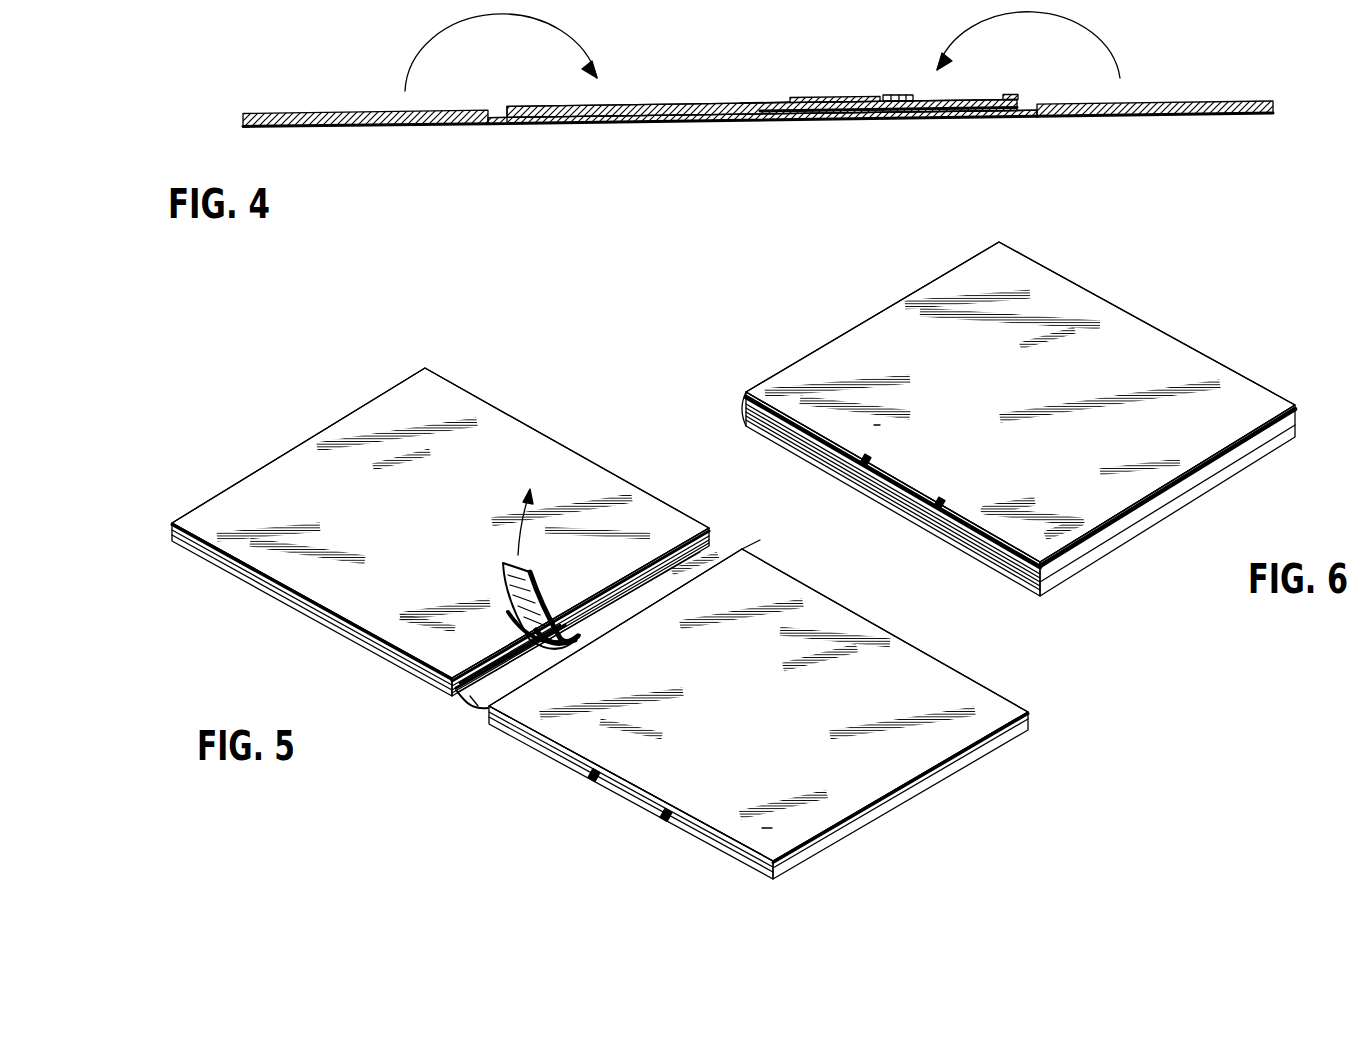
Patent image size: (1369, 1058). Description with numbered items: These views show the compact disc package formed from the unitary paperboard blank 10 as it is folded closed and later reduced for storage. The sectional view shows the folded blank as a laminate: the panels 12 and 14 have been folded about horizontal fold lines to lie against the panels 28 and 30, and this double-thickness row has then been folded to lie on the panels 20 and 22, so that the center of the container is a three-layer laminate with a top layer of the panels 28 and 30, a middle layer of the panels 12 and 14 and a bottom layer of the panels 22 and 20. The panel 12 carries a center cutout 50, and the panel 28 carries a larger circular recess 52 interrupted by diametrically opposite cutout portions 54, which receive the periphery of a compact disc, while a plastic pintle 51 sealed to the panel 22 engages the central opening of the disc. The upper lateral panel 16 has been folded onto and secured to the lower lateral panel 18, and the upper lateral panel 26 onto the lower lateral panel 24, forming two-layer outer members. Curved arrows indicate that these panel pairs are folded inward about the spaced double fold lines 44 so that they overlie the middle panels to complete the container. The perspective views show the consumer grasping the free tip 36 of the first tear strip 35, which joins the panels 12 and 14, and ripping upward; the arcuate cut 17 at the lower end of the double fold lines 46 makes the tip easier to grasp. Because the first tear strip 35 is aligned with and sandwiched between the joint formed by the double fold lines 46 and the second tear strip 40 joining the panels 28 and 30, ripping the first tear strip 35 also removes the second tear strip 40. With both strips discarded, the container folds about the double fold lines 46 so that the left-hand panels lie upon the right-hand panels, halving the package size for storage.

In FIG. 5, the unitary paperboard blank 10 is at (278, 400).
In FIG. 6, the unitary paperboard blank 10 is at (1208, 317).
In FIG. 4, the panel 12 is at (975, 118).
In FIG. 4, the panel 14 is at (688, 122).
In FIG. 4, the upper lateral panel 16 is at (328, 113).
In FIG. 5, the arcuate cut 17 is at (466, 704).
In FIG. 4, the lower lateral panel 18 is at (352, 124).
In FIG. 5, the lower lateral panel 18 is at (440, 509).
In FIG. 4, the panel 20 is at (605, 124).
In FIG. 5, the panel 20 is at (278, 596).
In FIG. 6, the panel 20 is at (1007, 390).
In FIG. 4, the panel 22 is at (838, 120).
In FIG. 5, the panel 22 is at (708, 843).
In FIG. 6, the panel 22 is at (975, 555).
In FIG. 4, the lower lateral panel 24 is at (1148, 116).
In FIG. 5, the lower lateral panel 24 is at (751, 724).
In FIG. 4, the upper lateral panel 26 is at (1198, 104).
In FIG. 4, the panel 28 is at (1010, 95).
In FIG. 4, the panel 30 is at (667, 104).
In FIG. 4, the first tear strip 35 is at (765, 112).
In FIG. 5, the tip 36 is at (500, 575).
In FIG. 4, the second tear strip 40 is at (762, 108).
In FIG. 5, the second tear strip 40 is at (547, 608).
In FIG. 4, the double fold lines 44 is at (497, 121).
In FIG. 5, the double fold lines 44 is at (170, 522).
In FIG. 6, the double fold lines 44 is at (1213, 466).
In FIG. 4, the double fold lines 46 is at (757, 120).
In FIG. 5, the double fold lines 46 is at (520, 655).
In FIG. 6, the double fold lines 46 is at (745, 405).
In FIG. 4, the center cutout 50 is at (917, 120).
In FIG. 4, the pintle 51 is at (893, 95).
In FIG. 4, the recess 52 is at (852, 97).
In FIG. 5, the cutout portions 54 is at (624, 793).
In FIG. 6, the cutout portions 54 is at (907, 520).